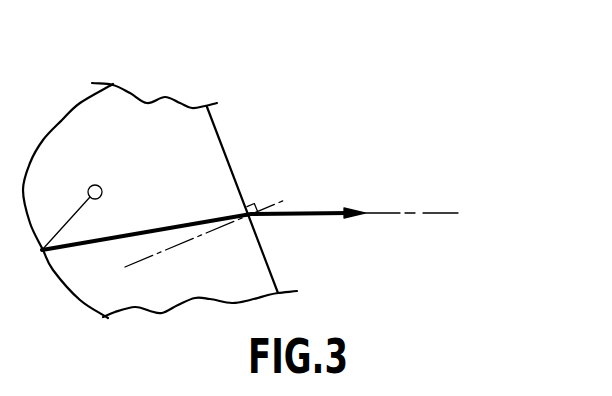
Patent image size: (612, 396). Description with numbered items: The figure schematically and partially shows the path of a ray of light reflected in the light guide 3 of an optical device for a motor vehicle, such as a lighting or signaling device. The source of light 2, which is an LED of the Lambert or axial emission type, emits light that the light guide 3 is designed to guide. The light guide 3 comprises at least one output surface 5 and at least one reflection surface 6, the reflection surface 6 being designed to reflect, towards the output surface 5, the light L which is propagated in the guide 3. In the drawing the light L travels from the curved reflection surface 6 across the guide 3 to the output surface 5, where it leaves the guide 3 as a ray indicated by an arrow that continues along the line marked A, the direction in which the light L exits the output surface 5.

The light guide 3 is at (98, 118).
The reflection surface 6 is at (29, 164).
The output surface 5 is at (222, 145).
The source of light 2 is at (97, 185).
The light L is at (292, 217).
The optical axis A is at (438, 213).